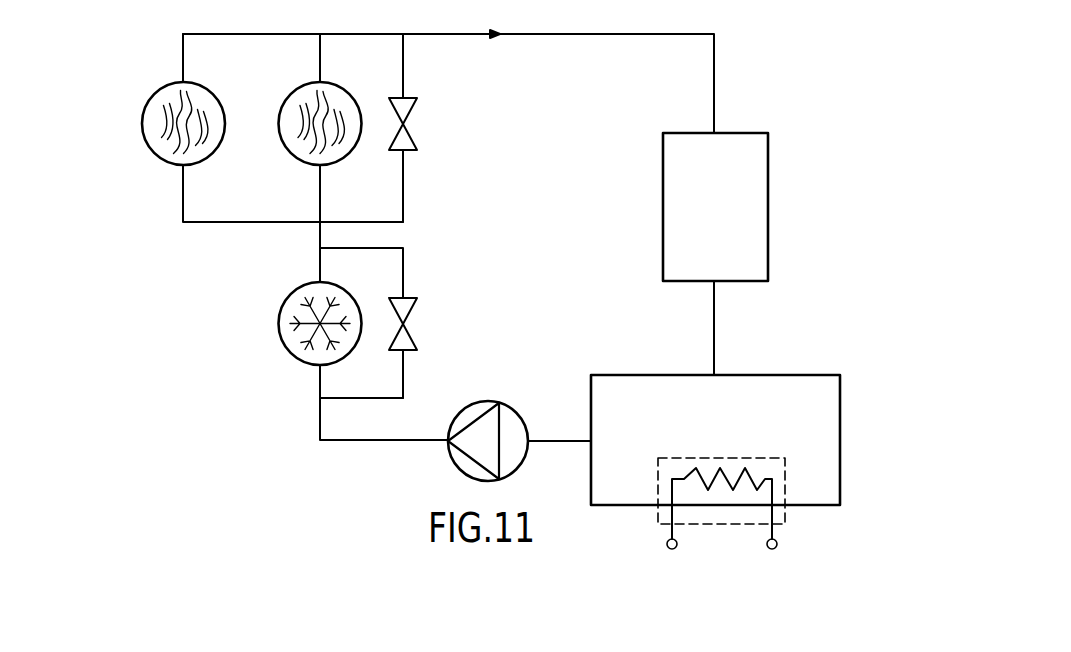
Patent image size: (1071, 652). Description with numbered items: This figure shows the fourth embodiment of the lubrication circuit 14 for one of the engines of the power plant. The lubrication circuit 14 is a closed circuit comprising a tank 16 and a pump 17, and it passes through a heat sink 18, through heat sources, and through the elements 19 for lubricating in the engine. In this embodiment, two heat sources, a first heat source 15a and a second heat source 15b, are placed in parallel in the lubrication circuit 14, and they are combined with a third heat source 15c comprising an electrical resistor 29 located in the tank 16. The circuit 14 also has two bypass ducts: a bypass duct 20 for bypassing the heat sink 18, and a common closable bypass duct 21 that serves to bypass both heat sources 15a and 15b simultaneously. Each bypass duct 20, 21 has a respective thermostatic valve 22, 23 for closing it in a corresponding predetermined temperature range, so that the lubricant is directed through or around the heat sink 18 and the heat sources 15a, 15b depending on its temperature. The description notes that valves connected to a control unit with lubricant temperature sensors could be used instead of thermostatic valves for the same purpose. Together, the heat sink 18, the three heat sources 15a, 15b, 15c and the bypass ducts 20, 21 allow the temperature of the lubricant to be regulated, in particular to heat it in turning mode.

The lubrication circuit 14 is at (778, 56).
The first heat source 15a is at (152, 86).
The second heat source 15b is at (289, 86).
The third heat source 15c is at (856, 434).
The tank 16 is at (726, 427).
The pump 17 is at (483, 400).
The heat sink 18 is at (278, 324).
The elements for lubricating 19 is at (727, 217).
The bypass duct 20 is at (404, 374).
The bypass duct 21 is at (404, 173).
The thermostatic valve 22 is at (407, 324).
The thermostatic valve 23 is at (407, 124).
The electrical resistor 29 is at (745, 468).